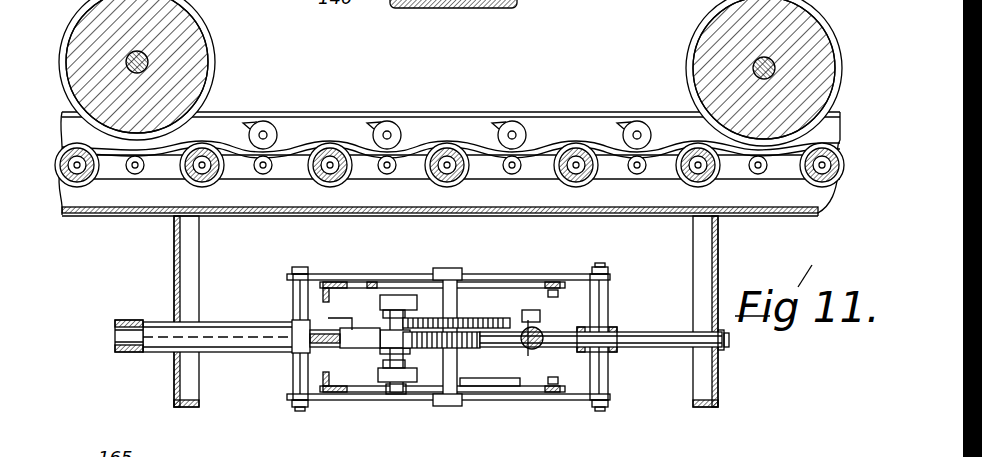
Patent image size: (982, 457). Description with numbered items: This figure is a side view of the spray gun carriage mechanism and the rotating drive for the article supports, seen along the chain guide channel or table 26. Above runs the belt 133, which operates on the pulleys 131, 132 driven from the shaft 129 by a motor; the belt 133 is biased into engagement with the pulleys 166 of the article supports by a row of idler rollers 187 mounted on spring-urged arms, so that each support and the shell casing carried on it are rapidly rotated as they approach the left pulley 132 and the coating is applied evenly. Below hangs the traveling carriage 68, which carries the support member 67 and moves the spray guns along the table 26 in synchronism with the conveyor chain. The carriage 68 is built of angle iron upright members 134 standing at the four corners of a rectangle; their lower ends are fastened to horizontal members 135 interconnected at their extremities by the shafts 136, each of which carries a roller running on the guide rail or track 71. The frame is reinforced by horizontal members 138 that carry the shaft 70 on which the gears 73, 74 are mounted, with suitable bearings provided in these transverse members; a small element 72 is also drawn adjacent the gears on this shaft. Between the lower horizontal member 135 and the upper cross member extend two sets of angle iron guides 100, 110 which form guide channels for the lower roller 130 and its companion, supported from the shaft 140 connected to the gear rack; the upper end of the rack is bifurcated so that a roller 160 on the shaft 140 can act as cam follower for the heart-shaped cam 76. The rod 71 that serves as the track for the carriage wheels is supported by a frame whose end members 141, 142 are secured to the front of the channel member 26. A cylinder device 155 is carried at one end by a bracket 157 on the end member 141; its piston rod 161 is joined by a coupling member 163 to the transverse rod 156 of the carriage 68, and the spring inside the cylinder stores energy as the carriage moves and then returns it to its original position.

The table / channel frame member 26 is at (798, 217).
The support member 67 is at (530, 352).
The traveling carriage 68 is at (439, 341).
The shaft 70 is at (472, 387).
The guide rail or track 71 is at (638, 337).
The pin 72 is at (537, 323).
The gear 73 is at (500, 320).
The gear 74 is at (466, 349).
The heart-shaped cam 76 is at (300, 330).
The angle iron guides 100 is at (383, 376).
The angle iron guides 110 is at (374, 293).
The shaft 129 is at (750, 72).
The lower roller 130 is at (405, 344).
The pulley 131 is at (731, 73).
The pulley 132 is at (193, 59).
The belt 133 is at (547, 142).
The angle iron upright members 134 is at (312, 274).
The horizontal members 135 is at (492, 276).
The shafts 136 is at (303, 380).
The horizontal members 138 is at (516, 290).
The shaft 140 is at (465, 380).
The end member 141 is at (180, 264).
The end member 142 is at (718, 276).
The device 155 is at (238, 340).
The transverse rod 156 is at (354, 366).
The bracket 157 is at (136, 354).
The roller 160 is at (320, 292).
The piston rod 161 is at (324, 345).
The coupling member 163 is at (335, 318).
The pulley 166 is at (312, 180).
The idler rollers 187 is at (271, 121).